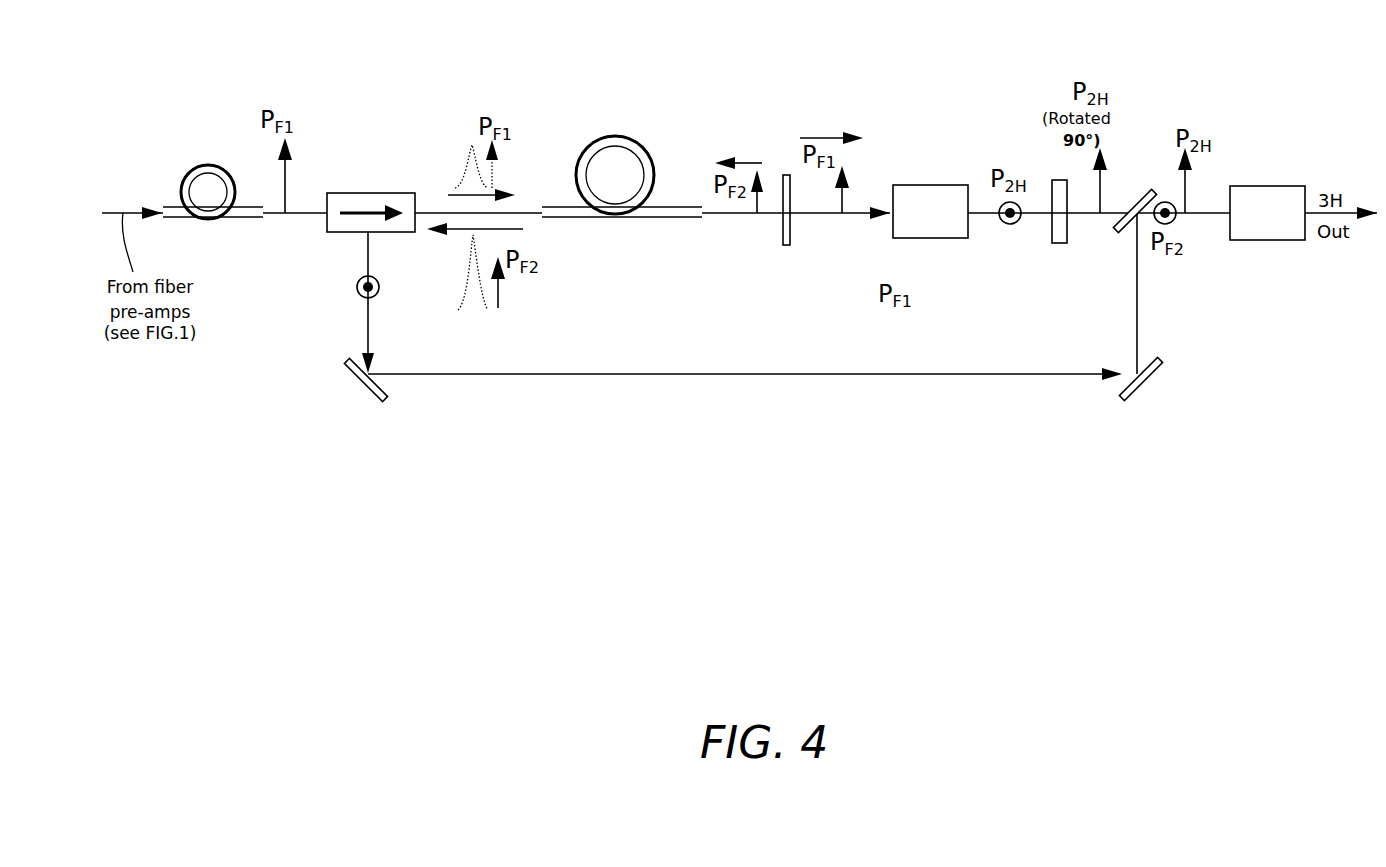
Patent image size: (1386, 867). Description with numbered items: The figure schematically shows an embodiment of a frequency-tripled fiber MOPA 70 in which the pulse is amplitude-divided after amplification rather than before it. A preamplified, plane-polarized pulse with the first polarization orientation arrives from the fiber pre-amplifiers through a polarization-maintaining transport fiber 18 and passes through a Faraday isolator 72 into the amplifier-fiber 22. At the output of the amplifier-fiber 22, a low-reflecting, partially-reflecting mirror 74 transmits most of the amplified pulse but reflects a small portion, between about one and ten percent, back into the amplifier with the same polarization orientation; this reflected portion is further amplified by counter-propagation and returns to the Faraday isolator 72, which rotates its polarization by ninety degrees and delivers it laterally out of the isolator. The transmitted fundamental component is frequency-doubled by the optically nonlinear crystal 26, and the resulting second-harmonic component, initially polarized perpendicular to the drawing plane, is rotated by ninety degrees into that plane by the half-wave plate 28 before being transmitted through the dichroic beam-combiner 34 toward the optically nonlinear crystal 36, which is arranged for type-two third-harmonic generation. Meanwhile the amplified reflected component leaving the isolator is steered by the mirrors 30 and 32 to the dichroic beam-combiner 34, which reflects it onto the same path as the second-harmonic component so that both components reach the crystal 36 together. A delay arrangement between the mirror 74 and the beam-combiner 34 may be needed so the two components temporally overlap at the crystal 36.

The polarization-maintaining transport fiber 18 is at (205, 165).
The Faraday isolator 72 is at (402, 193).
The amplifier-fiber 22 is at (617, 125).
The partially-reflecting mirror 74 is at (782, 180).
The optically nonlinear crystal 26 is at (940, 185).
The half-wave plate 28 is at (1050, 180).
The dichroic beam-combiner 34 is at (1135, 198).
The optically nonlinear crystal 36 is at (1242, 233).
The mirror 30 is at (352, 367).
The mirror 32 is at (1148, 380).
The frequency-tripled fiber MOPA 70 is at (562, 573).